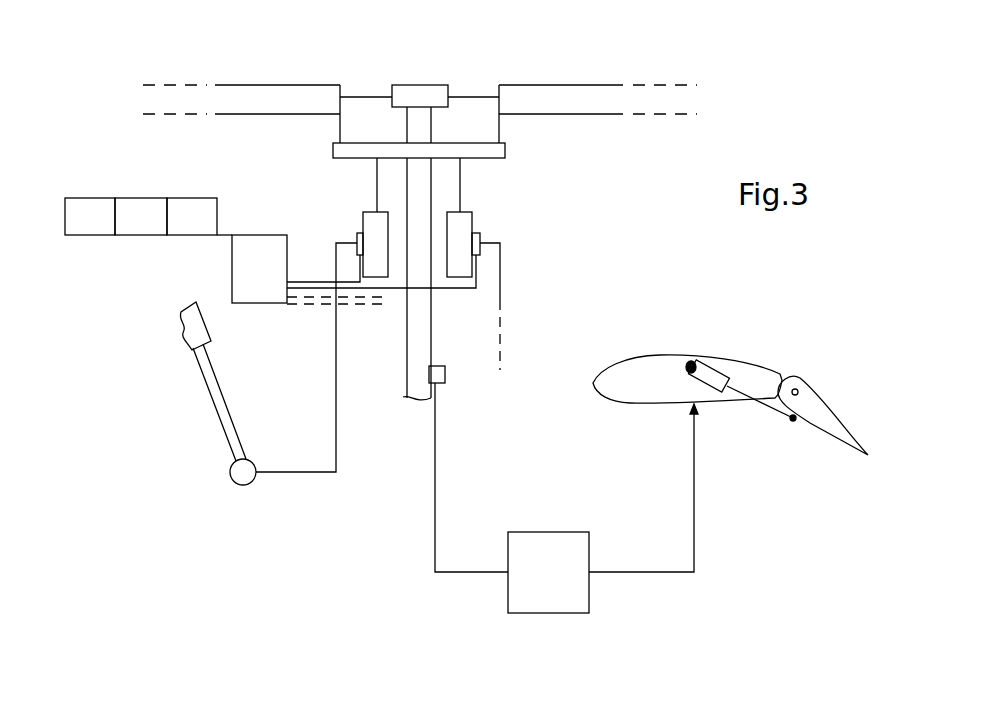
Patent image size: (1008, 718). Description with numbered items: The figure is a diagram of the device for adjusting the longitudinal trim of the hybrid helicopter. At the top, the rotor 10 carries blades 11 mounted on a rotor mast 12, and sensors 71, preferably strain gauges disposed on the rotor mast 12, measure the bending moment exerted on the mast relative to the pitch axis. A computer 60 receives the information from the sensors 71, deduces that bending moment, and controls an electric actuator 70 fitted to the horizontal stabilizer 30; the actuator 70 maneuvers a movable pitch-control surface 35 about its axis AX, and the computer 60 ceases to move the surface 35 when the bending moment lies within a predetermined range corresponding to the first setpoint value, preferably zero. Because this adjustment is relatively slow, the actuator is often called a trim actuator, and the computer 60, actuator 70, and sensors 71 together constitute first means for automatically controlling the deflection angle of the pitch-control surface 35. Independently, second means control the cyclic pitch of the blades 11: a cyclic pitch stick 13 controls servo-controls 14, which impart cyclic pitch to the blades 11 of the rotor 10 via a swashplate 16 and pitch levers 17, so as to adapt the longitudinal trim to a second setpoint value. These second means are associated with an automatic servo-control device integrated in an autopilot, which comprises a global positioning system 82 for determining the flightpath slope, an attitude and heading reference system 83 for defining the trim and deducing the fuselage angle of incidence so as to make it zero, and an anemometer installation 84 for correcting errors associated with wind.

The rotor 10 is at (525, 65).
The blades 11 is at (303, 85).
The rotor mast 12 is at (395, 398).
The cyclic pitch stick 13 is at (218, 387).
The servo-controls 14 is at (363, 218).
The swashplate 16 is at (505, 152).
The pitch levers 17 is at (340, 128).
The horizontal stabilizer 30 is at (612, 363).
The pitch-control surface 35 is at (818, 425).
The computer 60 is at (566, 498).
The electric actuator 70 is at (714, 357).
The sensors 71 is at (445, 376).
The global positioning system 82 is at (90, 216).
The attitude and heading reference system 83 is at (141, 216).
The anemometer installation 84 is at (192, 216).
The axis AX is at (797, 389).